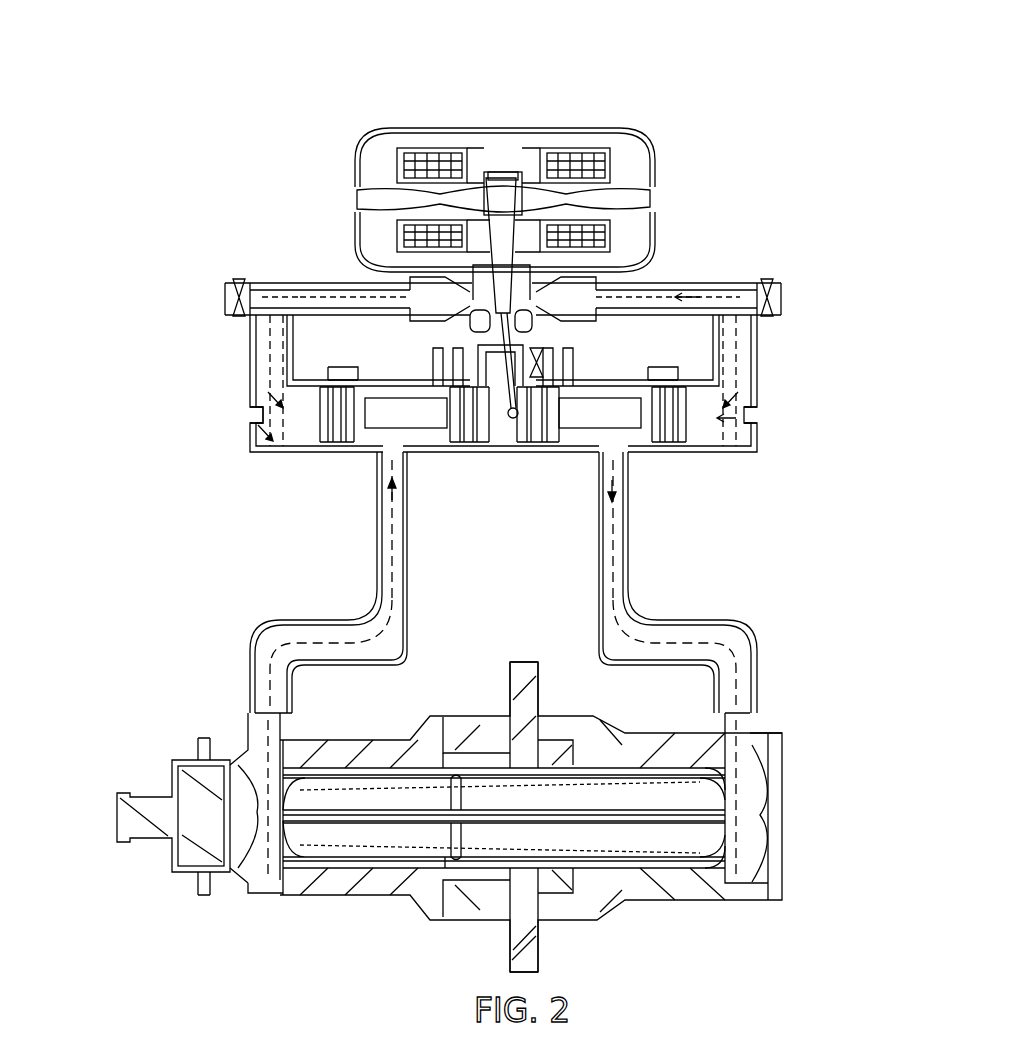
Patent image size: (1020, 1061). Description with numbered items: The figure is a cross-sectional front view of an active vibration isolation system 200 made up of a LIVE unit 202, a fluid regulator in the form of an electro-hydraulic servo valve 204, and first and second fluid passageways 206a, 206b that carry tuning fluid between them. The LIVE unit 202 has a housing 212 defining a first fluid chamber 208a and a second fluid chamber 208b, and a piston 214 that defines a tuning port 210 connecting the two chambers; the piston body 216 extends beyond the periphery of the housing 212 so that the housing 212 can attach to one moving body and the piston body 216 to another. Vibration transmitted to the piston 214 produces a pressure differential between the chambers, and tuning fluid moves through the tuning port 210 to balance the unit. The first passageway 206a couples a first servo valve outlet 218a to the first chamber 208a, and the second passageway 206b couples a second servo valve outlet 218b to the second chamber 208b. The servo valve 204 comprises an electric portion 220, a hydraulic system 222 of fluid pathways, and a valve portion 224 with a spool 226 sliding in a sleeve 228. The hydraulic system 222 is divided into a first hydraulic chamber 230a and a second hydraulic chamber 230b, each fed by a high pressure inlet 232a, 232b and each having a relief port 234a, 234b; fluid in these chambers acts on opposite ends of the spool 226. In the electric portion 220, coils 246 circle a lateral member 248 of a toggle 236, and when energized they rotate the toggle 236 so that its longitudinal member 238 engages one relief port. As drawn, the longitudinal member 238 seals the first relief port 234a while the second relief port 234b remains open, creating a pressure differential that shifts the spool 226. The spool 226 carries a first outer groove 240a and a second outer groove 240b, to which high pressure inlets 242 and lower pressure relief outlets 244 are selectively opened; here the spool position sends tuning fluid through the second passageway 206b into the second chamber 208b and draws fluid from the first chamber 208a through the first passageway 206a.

The active vibration isolation system 200 is at (645, 76).
The LIVE unit 202 is at (120, 876).
The servo valve 204 is at (208, 247).
The first fluid passageway 206a is at (377, 560).
The second fluid passageway 206b is at (630, 558).
The first fluid chamber 208a is at (264, 872).
The second fluid chamber 208b is at (766, 846).
The tuning port 210 is at (660, 820).
The housing 212 is at (187, 872).
The piston 214 is at (425, 852).
The piston body 216 is at (537, 935).
The first servo valve outlet 218a is at (377, 458).
The second servo valve outlet 218b is at (632, 458).
The electric portion 220 is at (340, 150).
The hydraulic system 222 is at (225, 336).
The valve portion 224 is at (740, 413).
The spool 226 is at (432, 420).
The sleeve 228 is at (258, 416).
The first hydraulic chamber 230a is at (268, 282).
The second hydraulic chamber 230b is at (740, 282).
The high pressure inlet 232a is at (225, 297).
The high pressure inlet 232b is at (773, 297).
The first relief port 234a is at (478, 322).
The second relief port 234b is at (483, 342).
The toggle 236 is at (503, 163).
The longitudinal member 238 is at (496, 163).
The first outer groove 240a is at (383, 384).
The second outer groove 240b is at (633, 383).
The high pressure inlet 242 is at (335, 350).
The lower pressure relief outlet 244 is at (410, 300).
The coils 246 is at (433, 160).
The lateral member 248 is at (597, 200).